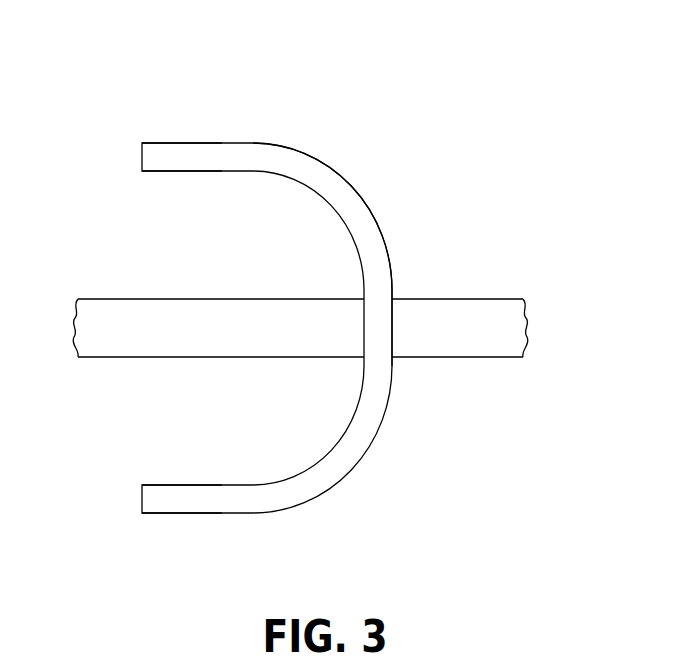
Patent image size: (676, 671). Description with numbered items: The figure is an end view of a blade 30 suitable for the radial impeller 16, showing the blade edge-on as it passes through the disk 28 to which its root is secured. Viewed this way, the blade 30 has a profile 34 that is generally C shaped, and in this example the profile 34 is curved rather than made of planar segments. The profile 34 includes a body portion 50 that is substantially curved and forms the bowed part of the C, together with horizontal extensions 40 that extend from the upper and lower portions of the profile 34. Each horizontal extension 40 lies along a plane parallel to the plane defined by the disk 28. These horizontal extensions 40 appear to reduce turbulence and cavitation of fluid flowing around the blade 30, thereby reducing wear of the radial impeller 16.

The radial impeller 16 is at (362, 39).
The disk 28 is at (482, 298).
The blade 30 is at (354, 125).
The profile 34 is at (392, 197).
The horizontal extension 40 is at (142, 135).
The body portion 50 is at (387, 252).